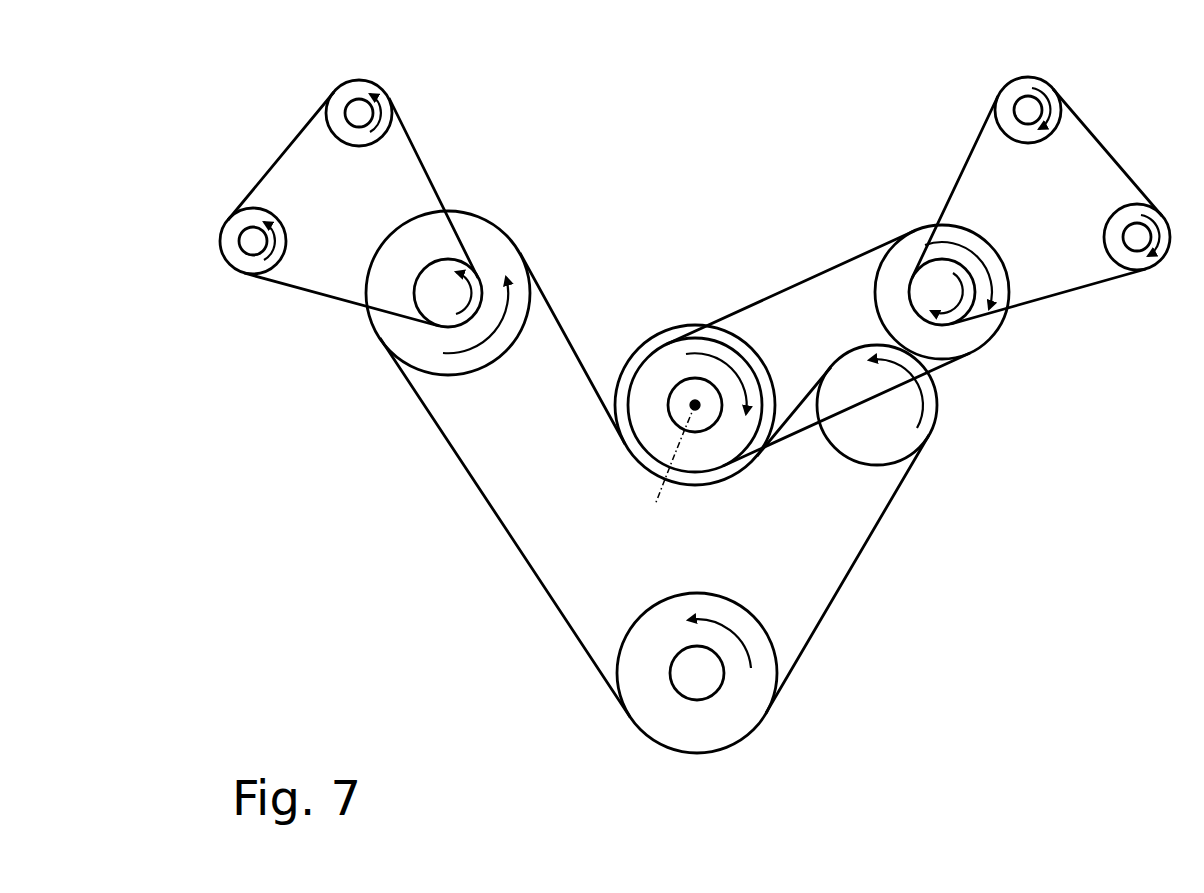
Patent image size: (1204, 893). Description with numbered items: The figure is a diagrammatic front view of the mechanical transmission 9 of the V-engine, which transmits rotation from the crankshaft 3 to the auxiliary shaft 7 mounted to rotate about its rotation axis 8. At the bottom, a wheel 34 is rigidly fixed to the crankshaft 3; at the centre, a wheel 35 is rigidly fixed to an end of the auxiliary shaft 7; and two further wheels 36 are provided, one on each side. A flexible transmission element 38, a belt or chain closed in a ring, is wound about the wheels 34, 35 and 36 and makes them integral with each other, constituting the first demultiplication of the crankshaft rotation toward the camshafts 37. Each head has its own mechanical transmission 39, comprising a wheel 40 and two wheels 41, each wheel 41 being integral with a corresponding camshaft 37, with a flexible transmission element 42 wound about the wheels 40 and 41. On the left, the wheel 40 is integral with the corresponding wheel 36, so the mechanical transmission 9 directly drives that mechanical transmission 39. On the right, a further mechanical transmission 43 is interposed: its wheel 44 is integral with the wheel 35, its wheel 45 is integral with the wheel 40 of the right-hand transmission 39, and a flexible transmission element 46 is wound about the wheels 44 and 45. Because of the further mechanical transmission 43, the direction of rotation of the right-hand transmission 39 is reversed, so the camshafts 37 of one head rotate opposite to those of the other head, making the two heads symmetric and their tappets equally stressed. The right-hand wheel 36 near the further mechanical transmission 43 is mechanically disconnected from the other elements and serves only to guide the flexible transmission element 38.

The crankshaft 3 is at (698, 676).
The auxiliary shaft 7 is at (690, 395).
The rotation axis 8 is at (668, 469).
The mechanical transmission 9 is at (960, 583).
The wheel 34 is at (652, 700).
The wheel 35 is at (636, 447).
The wheels 36 is at (400, 333).
The camshafts 37 is at (361, 108).
The flexible transmission element 38 is at (527, 566).
The mechanical transmission 39 is at (440, 103).
The wheel 40 is at (434, 284).
The wheels 41 is at (344, 99).
The flexible transmission element 42 is at (313, 297).
The further mechanical transmission 43 is at (752, 228).
The wheel 44 is at (697, 462).
The wheel 45 is at (975, 332).
The flexible transmission element 46 is at (782, 292).